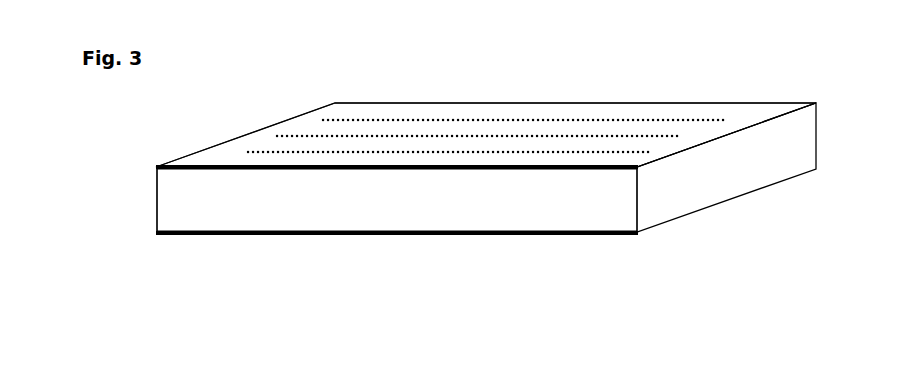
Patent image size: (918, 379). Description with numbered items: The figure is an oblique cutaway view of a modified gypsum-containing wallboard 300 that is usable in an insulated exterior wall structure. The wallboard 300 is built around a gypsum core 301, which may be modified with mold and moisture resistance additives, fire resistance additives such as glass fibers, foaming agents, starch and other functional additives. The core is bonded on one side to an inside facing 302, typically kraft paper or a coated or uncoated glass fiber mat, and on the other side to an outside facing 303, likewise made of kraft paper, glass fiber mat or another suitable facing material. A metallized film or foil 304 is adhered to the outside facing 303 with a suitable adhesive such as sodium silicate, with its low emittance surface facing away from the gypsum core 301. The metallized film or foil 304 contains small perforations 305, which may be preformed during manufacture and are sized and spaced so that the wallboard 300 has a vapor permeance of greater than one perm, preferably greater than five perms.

The gypsum-containing wallboard 300 is at (158, 138).
The gypsum core 301 is at (217, 215).
The inside facing 302 is at (348, 234).
The outside facing 303 is at (205, 164).
The metallized film or foil 304 is at (295, 118).
The perforations 305 is at (458, 118).